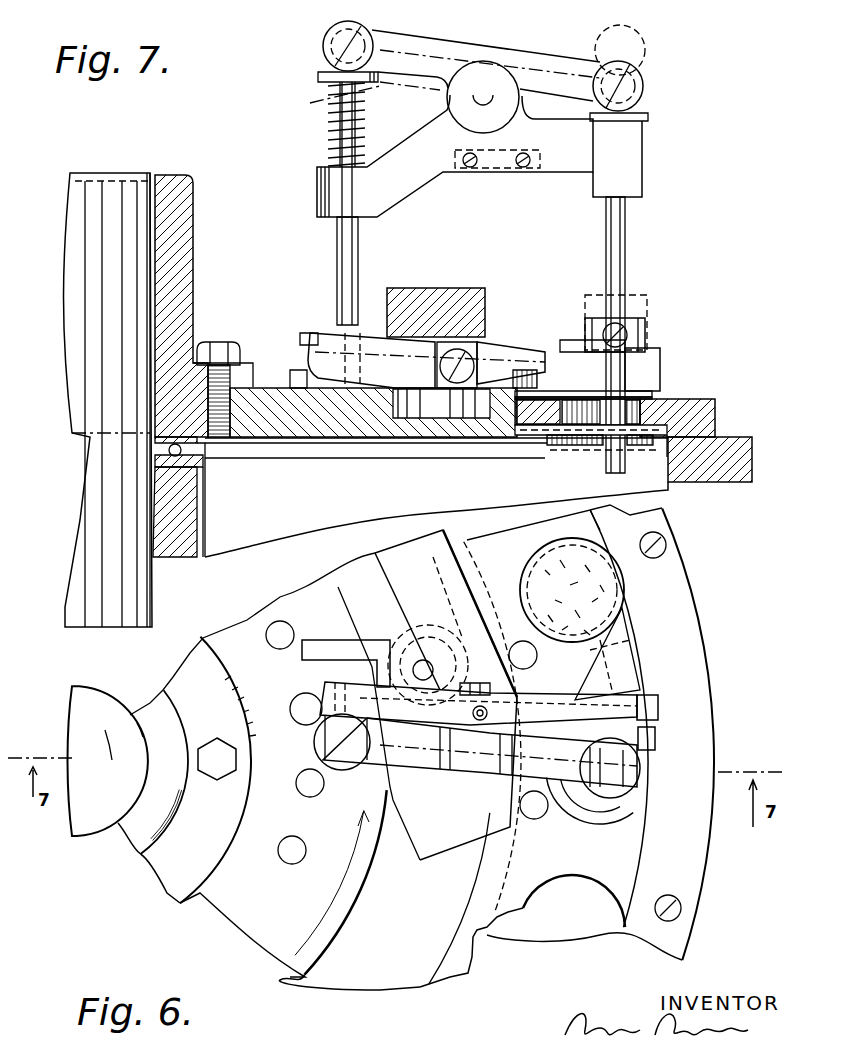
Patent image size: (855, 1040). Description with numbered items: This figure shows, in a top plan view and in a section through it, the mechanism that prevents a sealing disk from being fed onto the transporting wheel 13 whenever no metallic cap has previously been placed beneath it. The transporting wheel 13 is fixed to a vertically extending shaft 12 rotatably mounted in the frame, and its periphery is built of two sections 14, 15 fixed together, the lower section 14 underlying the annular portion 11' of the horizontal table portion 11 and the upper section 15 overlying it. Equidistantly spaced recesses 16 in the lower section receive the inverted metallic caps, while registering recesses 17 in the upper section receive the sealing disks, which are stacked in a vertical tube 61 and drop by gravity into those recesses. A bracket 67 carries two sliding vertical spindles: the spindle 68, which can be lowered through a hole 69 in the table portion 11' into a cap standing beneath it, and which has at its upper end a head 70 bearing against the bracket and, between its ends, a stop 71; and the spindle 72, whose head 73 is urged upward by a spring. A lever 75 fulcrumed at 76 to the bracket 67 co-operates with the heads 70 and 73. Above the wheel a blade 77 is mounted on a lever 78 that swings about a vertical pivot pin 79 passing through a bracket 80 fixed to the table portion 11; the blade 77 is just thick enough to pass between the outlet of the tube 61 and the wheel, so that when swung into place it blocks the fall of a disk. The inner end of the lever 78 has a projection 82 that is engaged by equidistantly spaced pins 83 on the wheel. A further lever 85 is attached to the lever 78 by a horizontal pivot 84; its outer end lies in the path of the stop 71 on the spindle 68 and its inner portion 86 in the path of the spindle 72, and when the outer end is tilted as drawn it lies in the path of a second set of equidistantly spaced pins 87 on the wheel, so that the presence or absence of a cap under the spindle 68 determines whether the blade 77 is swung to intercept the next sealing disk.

In FIG. 7, the table portion 11 is at (494, 496).
In FIG. 7, the annular portion of the table 11' is at (699, 416).
In FIG. 6, the annular portion of the table 11' is at (670, 732).
In FIG. 7, the vertically extending shaft 12 is at (92, 523).
In FIG. 6, the vertically extending shaft 12 is at (80, 818).
In FIG. 7, the transporting wheel 13 is at (262, 395).
In FIG. 6, the transporting wheel 13 is at (262, 945).
In FIG. 7, the section 14 is at (330, 145).
In FIG. 7, the section 15 is at (543, 399).
In FIG. 7, the recesses 16 is at (577, 441).
In FIG. 7, the recesses 17 is at (645, 398).
In FIG. 6, the recesses 17 is at (622, 810).
In FIG. 6, the vertical tube 61 is at (622, 585).
In FIG. 7, the bracket 67 is at (425, 180).
In FIG. 6, the bracket 67 is at (420, 760).
In FIG. 7, the vertical spindle 68 is at (628, 250).
In FIG. 7, the hole 69 is at (641, 410).
In FIG. 7, the head 70 is at (648, 118).
In FIG. 6, the head 70 is at (628, 770).
In FIG. 7, the stop 71 is at (645, 330).
In FIG. 7, the vertical spindle 72 is at (337, 282).
In FIG. 7, the head 73 is at (318, 78).
In FIG. 6, the head 73 is at (314, 742).
In FIG. 7, the lever 75 is at (560, 70).
In FIG. 6, the lever 75 is at (340, 685).
In FIG. 7, the fulcrum 76 is at (483, 88).
In FIG. 7, the blade 77 is at (652, 391).
In FIG. 6, the blade 77 is at (625, 660).
In FIG. 7, the lever 78 is at (660, 352).
In FIG. 6, the lever 78 is at (658, 712).
In FIG. 6, the vertical pivot pin 79 is at (425, 665).
In FIG. 7, the bracket 80 is at (475, 300).
In FIG. 6, the bracket 80 is at (507, 823).
In FIG. 6, the projection 82 is at (330, 640).
In FIG. 7, the pins 83 is at (294, 370).
In FIG. 6, the pins 83 is at (290, 838).
In FIG. 7, the horizontal pivot 84 is at (455, 378).
In FIG. 7, the lever 85 is at (567, 340).
In FIG. 6, the lever 85 is at (655, 736).
In FIG. 7, the inner portion 86 is at (581, 318).
In FIG. 7, the pins 87 is at (513, 375).
In FIG. 6, the pins 87 is at (522, 641).